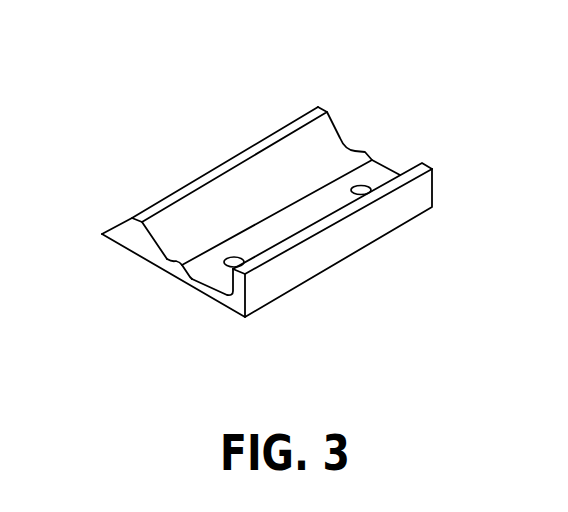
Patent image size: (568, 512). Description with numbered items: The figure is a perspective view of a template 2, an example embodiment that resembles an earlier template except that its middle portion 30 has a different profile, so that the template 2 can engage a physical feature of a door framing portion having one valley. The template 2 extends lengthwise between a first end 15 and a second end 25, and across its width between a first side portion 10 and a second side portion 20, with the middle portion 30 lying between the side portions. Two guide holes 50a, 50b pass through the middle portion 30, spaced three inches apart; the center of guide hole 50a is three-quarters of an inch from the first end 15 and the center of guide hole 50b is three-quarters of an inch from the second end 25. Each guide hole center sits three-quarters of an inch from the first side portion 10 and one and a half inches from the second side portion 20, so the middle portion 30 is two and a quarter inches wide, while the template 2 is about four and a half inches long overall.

The template 2 is at (99, 97).
The first side portion 10 is at (383, 219).
The first end 15 is at (148, 242).
The second side portion 20 is at (193, 182).
The second end 25 is at (432, 169).
The middle portion 30 is at (318, 197).
The guide hole 50a is at (224, 263).
The guide hole 50b is at (362, 186).